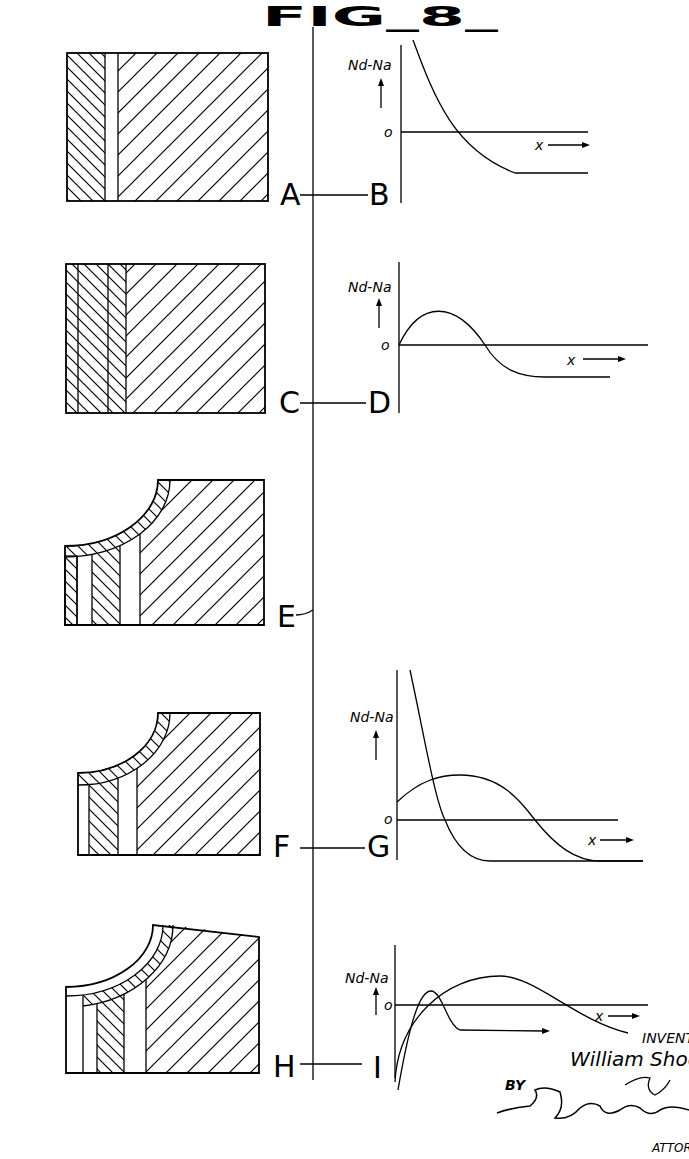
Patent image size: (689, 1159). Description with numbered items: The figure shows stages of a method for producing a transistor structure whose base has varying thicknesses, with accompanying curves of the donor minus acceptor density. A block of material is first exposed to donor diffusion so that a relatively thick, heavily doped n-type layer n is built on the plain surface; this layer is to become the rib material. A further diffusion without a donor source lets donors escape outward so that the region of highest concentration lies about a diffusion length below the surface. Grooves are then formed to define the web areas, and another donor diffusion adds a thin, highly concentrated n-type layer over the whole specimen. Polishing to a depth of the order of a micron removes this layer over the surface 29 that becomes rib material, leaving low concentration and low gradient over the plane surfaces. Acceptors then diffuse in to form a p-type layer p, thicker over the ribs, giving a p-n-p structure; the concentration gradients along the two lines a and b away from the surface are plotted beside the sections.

The n-type layer n is at (97, 567).
The p-layer p is at (174, 578).
The surface 29 is at (63, 615).
The line a is at (334, 928).
The line b is at (368, 880).